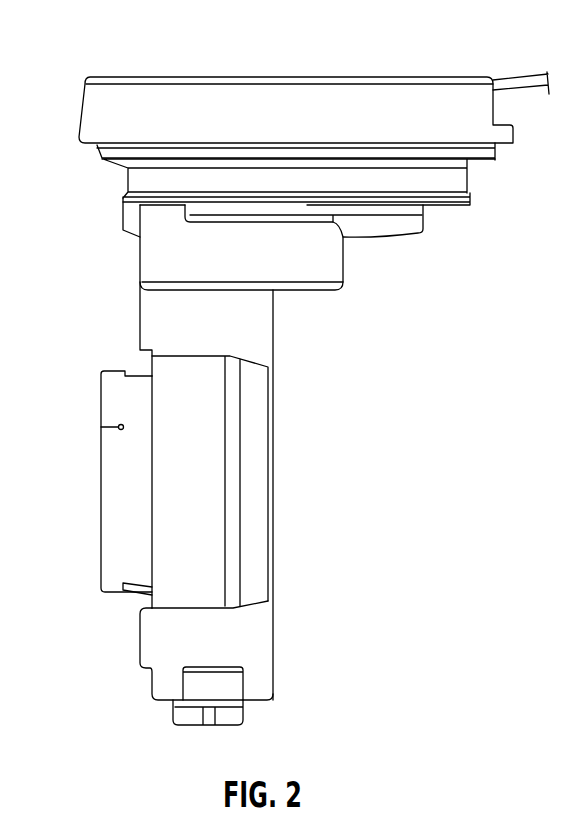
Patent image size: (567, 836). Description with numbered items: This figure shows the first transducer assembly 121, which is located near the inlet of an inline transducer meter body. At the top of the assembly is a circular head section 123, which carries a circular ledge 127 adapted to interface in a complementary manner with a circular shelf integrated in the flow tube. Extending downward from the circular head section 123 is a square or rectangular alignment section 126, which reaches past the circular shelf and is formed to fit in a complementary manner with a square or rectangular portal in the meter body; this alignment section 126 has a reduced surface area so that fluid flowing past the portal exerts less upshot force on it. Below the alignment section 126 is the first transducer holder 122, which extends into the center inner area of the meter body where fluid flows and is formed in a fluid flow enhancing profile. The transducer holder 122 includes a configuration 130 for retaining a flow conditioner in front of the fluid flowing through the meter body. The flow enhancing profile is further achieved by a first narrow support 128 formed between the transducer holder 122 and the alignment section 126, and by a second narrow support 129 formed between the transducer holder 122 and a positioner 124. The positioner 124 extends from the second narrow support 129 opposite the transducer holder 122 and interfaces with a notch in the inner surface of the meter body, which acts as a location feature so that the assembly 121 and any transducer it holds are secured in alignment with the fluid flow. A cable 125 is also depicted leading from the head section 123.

The first transducer assembly 121 is at (347, 107).
The first transducer holder 122 is at (261, 481).
The circular head section 123 is at (184, 85).
The positioner 124 is at (190, 713).
The cable 125 is at (512, 78).
The square or rectangular alignment section 126 is at (352, 261).
The circular ledge 127 is at (105, 169).
The first narrow support 128 is at (256, 326).
The second narrow support 129 is at (165, 638).
The configuration 130 is at (88, 487).